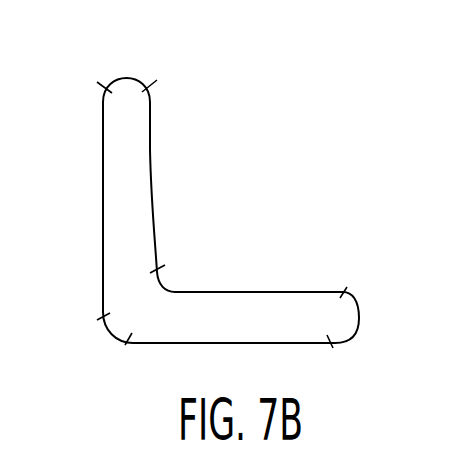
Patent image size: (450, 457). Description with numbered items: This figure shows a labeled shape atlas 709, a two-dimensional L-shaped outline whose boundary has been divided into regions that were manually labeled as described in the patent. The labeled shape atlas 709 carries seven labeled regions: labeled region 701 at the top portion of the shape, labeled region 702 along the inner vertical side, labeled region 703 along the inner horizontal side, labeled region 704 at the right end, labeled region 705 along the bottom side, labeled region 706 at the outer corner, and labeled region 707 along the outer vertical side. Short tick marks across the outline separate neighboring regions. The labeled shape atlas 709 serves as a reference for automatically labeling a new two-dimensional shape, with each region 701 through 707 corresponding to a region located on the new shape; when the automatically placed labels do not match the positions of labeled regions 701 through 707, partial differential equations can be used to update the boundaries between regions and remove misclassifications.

The labeled region 701 is at (129, 77).
The labeled region 702 is at (154, 190).
The labeled region 703 is at (274, 290).
The labeled region 704 is at (358, 310).
The labeled region 705 is at (312, 347).
The labeled region 706 is at (107, 333).
The labeled region 707 is at (103, 196).
The labeled shape atlas 709 is at (185, 68).